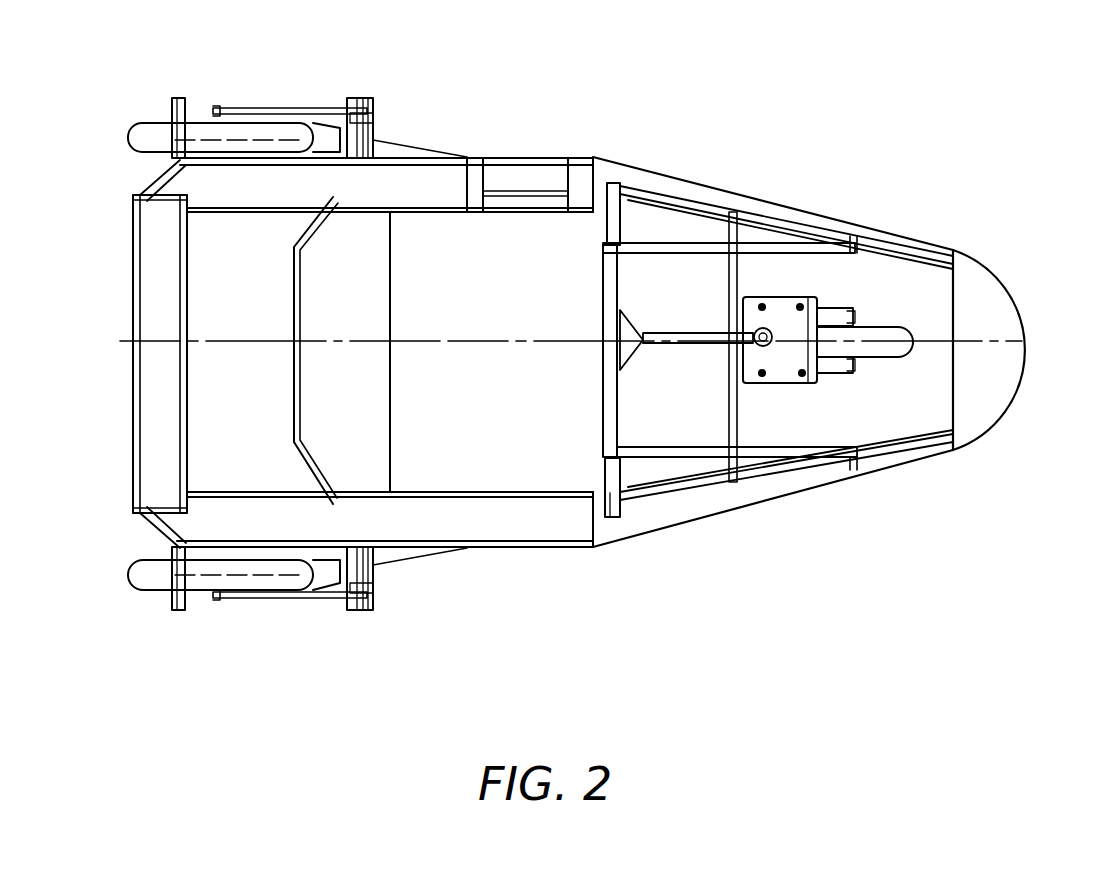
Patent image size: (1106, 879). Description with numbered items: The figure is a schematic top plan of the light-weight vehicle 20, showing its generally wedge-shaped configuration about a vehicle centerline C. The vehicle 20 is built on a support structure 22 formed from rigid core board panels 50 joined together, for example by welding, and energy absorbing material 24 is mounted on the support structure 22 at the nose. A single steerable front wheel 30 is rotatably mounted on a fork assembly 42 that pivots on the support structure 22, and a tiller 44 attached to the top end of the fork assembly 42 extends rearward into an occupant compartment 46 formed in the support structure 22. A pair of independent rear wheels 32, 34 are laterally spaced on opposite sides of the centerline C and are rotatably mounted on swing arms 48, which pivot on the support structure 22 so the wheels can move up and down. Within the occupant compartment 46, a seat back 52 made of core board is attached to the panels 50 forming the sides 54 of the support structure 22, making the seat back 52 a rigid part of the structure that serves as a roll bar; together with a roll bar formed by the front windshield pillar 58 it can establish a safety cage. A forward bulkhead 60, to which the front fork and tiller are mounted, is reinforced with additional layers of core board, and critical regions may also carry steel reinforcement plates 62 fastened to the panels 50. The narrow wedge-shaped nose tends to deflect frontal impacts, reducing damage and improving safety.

The light-weight vehicle 20 is at (744, 110).
The support structure 22 is at (567, 512).
The energy absorbing material 24 is at (1010, 387).
The front wheel 30 is at (913, 327).
The rear wheel 32 is at (145, 120).
The rear wheel 34 is at (203, 592).
The fork assembly 42 is at (840, 307).
The tiller 44 is at (683, 345).
The occupant compartment 46 is at (513, 396).
The swing arms 48 is at (312, 110).
The rigid core board panels 50 is at (190, 388).
The seat back 52 is at (302, 222).
The sides 54 is at (437, 500).
The front windshield pillar 58 is at (650, 190).
The forward bulkhead 60 is at (903, 420).
The plates 62 is at (797, 297).
The vehicle centerline C is at (453, 334).